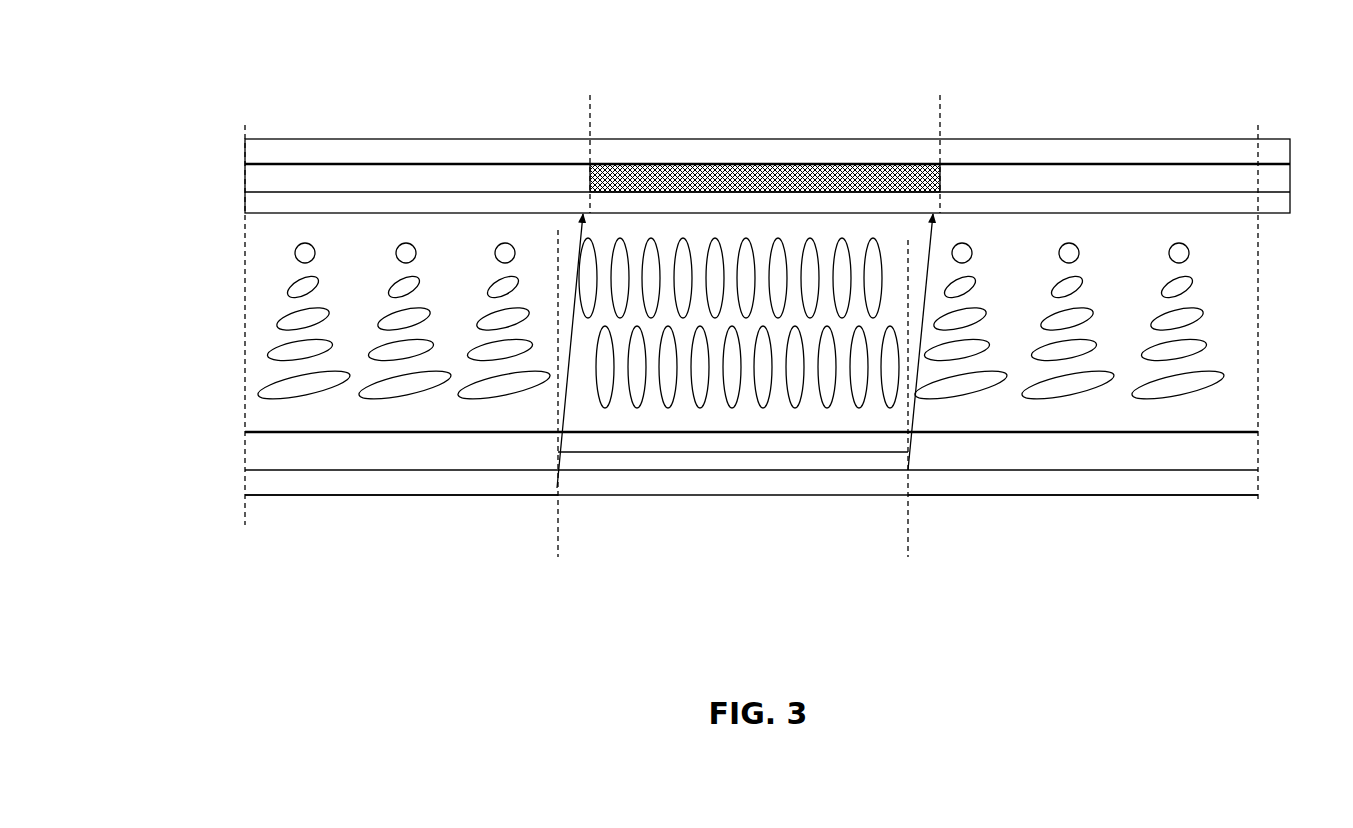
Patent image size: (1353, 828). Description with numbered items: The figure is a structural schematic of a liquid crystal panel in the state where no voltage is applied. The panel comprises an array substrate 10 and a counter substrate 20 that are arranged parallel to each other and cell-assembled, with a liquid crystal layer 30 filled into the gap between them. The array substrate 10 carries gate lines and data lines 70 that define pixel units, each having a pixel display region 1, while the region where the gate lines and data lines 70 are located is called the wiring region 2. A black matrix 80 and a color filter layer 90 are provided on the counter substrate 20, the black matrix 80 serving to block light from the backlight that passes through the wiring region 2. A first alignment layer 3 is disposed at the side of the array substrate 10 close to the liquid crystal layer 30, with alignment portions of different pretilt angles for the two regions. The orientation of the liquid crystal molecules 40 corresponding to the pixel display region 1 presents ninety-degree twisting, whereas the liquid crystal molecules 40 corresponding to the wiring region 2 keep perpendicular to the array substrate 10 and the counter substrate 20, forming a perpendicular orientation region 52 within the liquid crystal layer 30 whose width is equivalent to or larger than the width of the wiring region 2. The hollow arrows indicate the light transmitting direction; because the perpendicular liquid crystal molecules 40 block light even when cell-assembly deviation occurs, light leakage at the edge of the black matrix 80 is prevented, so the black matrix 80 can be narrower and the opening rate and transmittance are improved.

The pixel display region 1 is at (397, 508).
The wiring region 2 is at (690, 507).
The first alignment layer 3 is at (1218, 450).
The array substrate 10 is at (257, 485).
The counter substrate 20 is at (260, 153).
The liquid crystal layer 30 is at (240, 268).
The liquid crystal molecules 40 is at (873, 278).
The perpendicular orientation region 52 is at (625, 417).
The data lines 70 is at (767, 463).
The black matrix 80 is at (750, 170).
The color filter layer 90 is at (373, 177).